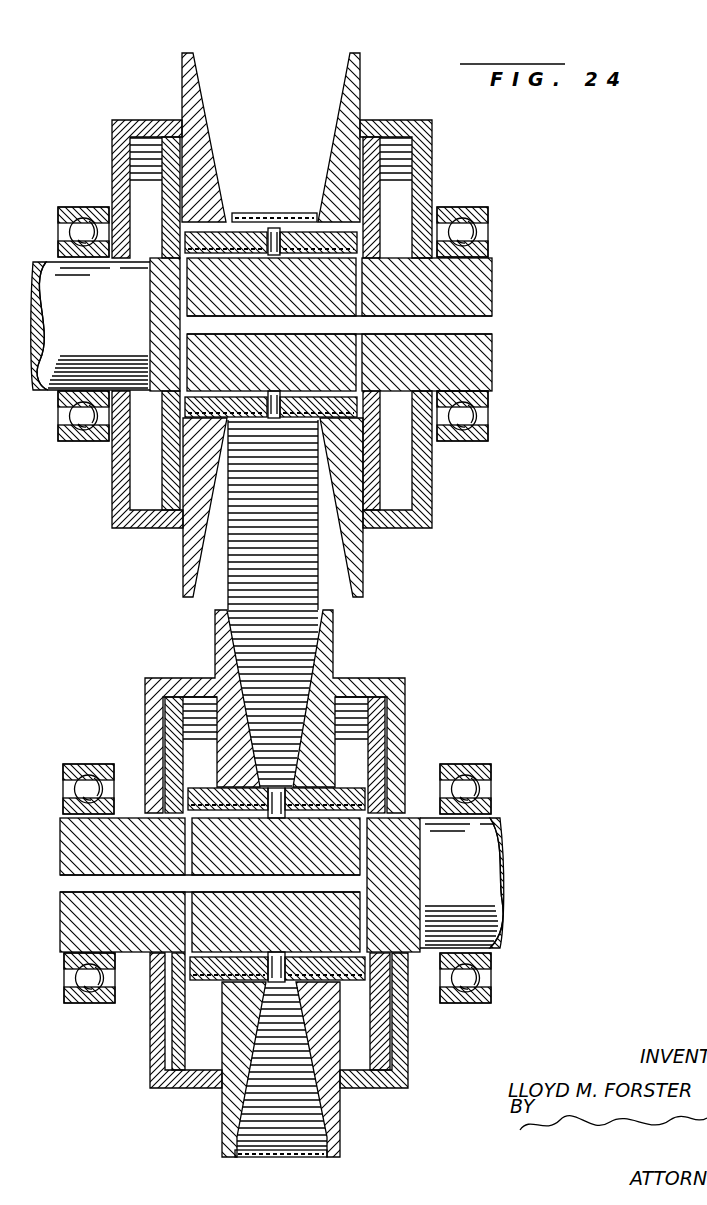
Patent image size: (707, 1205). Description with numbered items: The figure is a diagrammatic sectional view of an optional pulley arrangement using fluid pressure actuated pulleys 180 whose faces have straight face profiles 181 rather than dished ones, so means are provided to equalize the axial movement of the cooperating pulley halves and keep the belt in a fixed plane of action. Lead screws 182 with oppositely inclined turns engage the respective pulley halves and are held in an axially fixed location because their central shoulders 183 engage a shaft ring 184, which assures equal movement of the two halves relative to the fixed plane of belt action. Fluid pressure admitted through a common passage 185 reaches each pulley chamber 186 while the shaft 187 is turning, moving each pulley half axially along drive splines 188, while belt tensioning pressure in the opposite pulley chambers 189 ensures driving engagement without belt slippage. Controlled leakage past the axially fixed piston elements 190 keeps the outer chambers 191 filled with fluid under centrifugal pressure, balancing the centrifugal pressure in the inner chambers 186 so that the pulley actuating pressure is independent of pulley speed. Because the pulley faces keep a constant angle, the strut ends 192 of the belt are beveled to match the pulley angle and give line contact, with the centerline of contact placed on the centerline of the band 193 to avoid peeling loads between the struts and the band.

The fluid pressure actuated pulley 180 is at (183, 92).
The straight face profile 181 is at (328, 153).
The lead screw 182 is at (240, 240).
The central shoulder 183 is at (272, 254).
The shaft ring 184 is at (268, 402).
The common passage 185 is at (477, 325).
The pulley chamber 186 is at (355, 195).
The shaft 187 is at (488, 292).
The drive spline 188 is at (213, 257).
The opposite pulley chamber 189 is at (360, 1048).
The axially fixed piston element 190 is at (173, 480).
The outer chamber 191 is at (375, 740).
The strut end 192 is at (337, 1147).
The band 193 is at (273, 213).